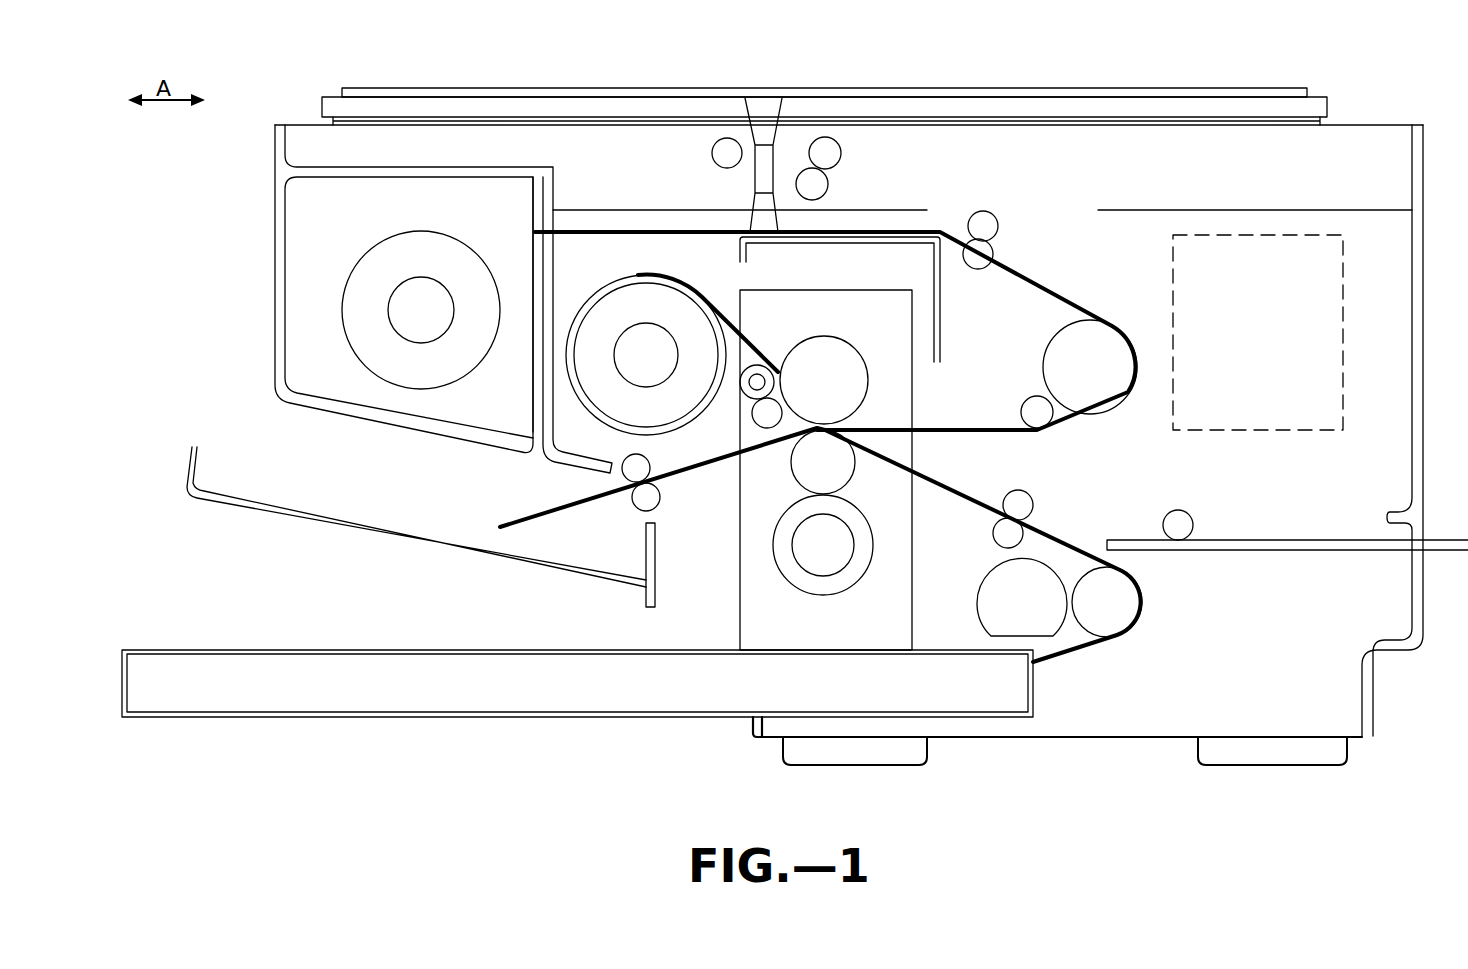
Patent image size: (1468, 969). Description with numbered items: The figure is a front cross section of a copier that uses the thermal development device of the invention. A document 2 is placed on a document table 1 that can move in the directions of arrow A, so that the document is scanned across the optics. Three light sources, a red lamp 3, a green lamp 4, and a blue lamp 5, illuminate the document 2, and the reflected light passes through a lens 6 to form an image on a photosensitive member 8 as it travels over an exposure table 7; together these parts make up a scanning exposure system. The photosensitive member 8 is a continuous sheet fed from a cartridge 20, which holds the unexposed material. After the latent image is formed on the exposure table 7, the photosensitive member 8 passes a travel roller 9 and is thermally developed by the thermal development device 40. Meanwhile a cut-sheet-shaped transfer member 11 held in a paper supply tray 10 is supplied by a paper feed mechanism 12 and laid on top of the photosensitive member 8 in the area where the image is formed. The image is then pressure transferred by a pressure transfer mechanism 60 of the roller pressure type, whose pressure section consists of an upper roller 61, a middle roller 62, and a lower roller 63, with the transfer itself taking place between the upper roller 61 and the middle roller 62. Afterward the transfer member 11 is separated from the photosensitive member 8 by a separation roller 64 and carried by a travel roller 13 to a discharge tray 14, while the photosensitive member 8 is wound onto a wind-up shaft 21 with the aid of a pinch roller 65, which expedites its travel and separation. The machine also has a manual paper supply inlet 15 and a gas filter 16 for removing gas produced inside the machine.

The document table 1 is at (330, 104).
The document 2 is at (397, 87).
The red lamp 3 is at (715, 143).
The green lamp 4 is at (829, 184).
The blue lamp 5 is at (843, 152).
The lens 6 is at (757, 147).
The exposure table 7 is at (918, 235).
The photosensitive member 8 is at (610, 226).
The travel roller 9 is at (983, 211).
The paper supply tray 10 is at (405, 718).
The transfer member 11 is at (342, 692).
The paper feed mechanism 12 is at (1003, 627).
The travel roller 13 is at (642, 500).
The discharge tray 14 is at (305, 520).
The manual paper supply inlet 15 is at (1308, 520).
The gas filter 16 is at (1266, 255).
The cartridge 20 is at (376, 207).
The wind-up shaft 21 is at (652, 275).
The thermal development device 40 is at (1092, 278).
The pressure transfer mechanism 60 is at (806, 632).
The upper roller 61 is at (852, 345).
The middle roller 62 is at (845, 470).
The lower roller 63 is at (847, 580).
The separation roller 64 is at (767, 430).
The pinch roller 65 is at (742, 403).